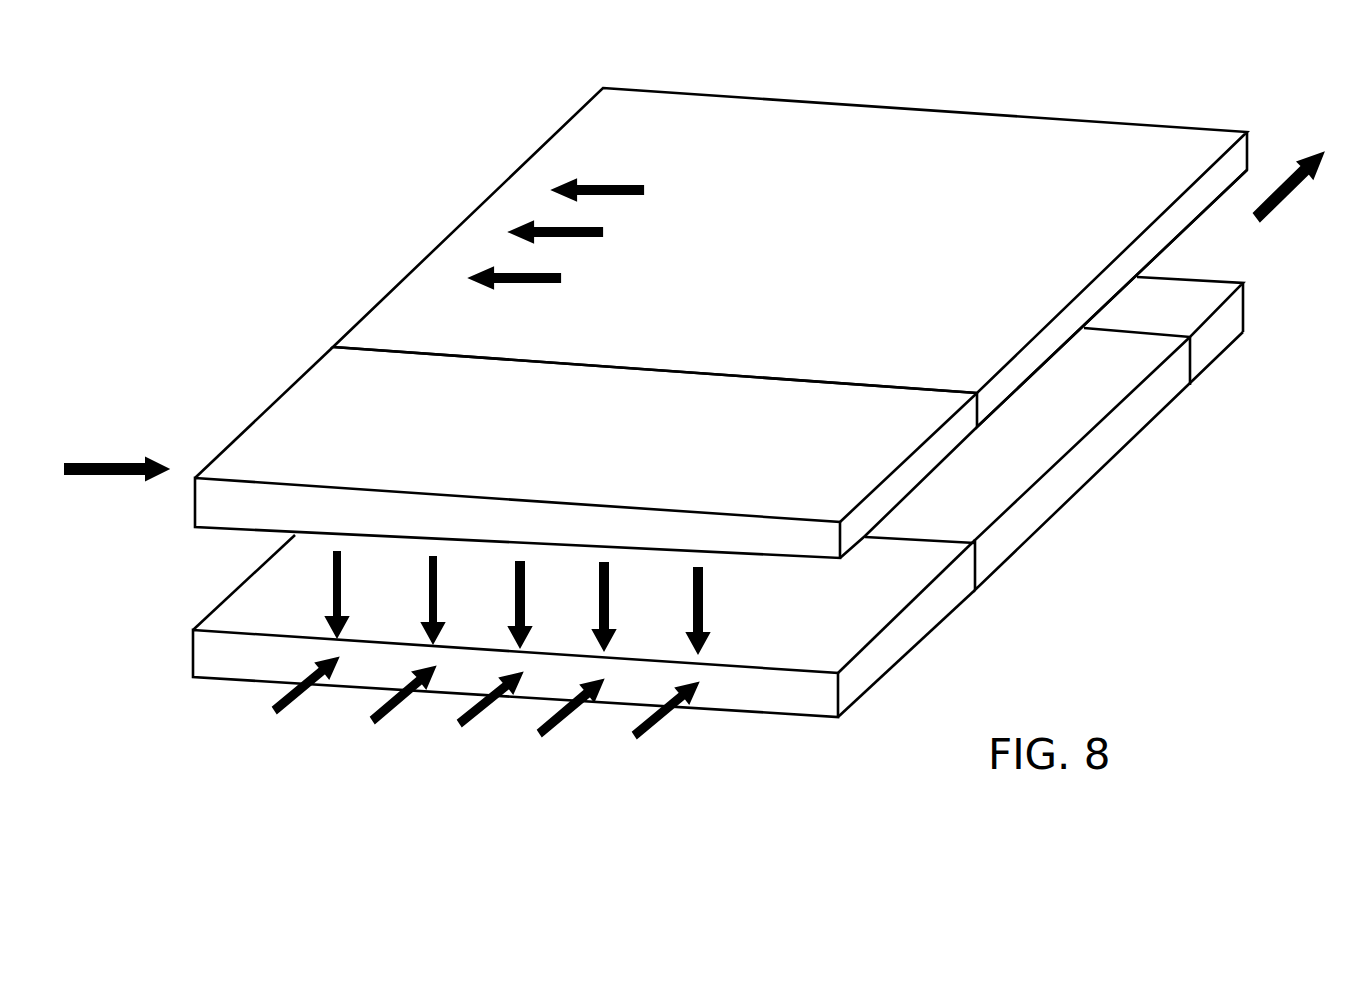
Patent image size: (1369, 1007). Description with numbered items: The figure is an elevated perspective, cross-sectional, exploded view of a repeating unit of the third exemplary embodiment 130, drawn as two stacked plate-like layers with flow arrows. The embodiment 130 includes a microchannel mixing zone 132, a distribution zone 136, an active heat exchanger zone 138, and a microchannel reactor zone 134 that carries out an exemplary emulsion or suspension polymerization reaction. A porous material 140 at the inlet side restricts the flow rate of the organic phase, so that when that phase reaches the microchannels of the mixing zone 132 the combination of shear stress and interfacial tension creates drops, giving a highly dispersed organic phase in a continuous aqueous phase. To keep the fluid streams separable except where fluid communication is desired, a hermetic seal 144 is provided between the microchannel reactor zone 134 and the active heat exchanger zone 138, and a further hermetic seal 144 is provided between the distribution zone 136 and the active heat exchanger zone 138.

The third exemplary embodiment 130 is at (266, 173).
The microchannel mixing zone 132 is at (893, 637).
The microchannel reactor zone 134 is at (1128, 427).
The distribution zone 136 is at (272, 405).
The active heat exchanger zone 138 is at (558, 130).
The porous material 140 is at (225, 525).
The hermetic seal 144 is at (317, 347).